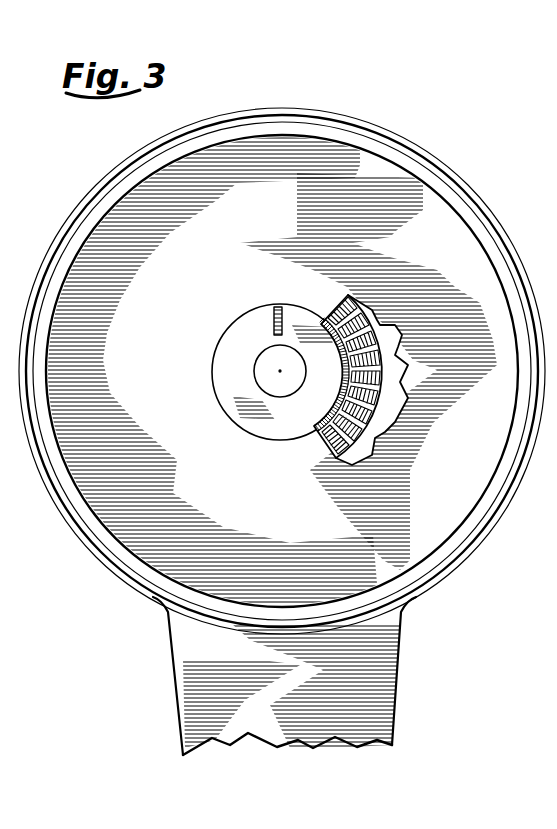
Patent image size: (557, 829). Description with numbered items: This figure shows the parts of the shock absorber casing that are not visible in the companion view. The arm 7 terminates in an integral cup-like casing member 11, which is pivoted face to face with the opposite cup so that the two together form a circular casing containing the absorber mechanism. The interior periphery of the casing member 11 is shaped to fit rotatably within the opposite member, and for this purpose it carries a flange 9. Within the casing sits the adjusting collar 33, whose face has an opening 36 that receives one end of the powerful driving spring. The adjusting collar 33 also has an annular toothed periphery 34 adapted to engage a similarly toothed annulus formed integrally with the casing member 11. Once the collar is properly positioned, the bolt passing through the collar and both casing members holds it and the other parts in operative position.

The arm 7 is at (187, 675).
The flange 9 is at (370, 148).
The cup-like casing member 11 is at (483, 287).
The adjusting collar 33 is at (276, 306).
The annular toothed periphery 34 is at (372, 373).
The opening 36 is at (278, 321).